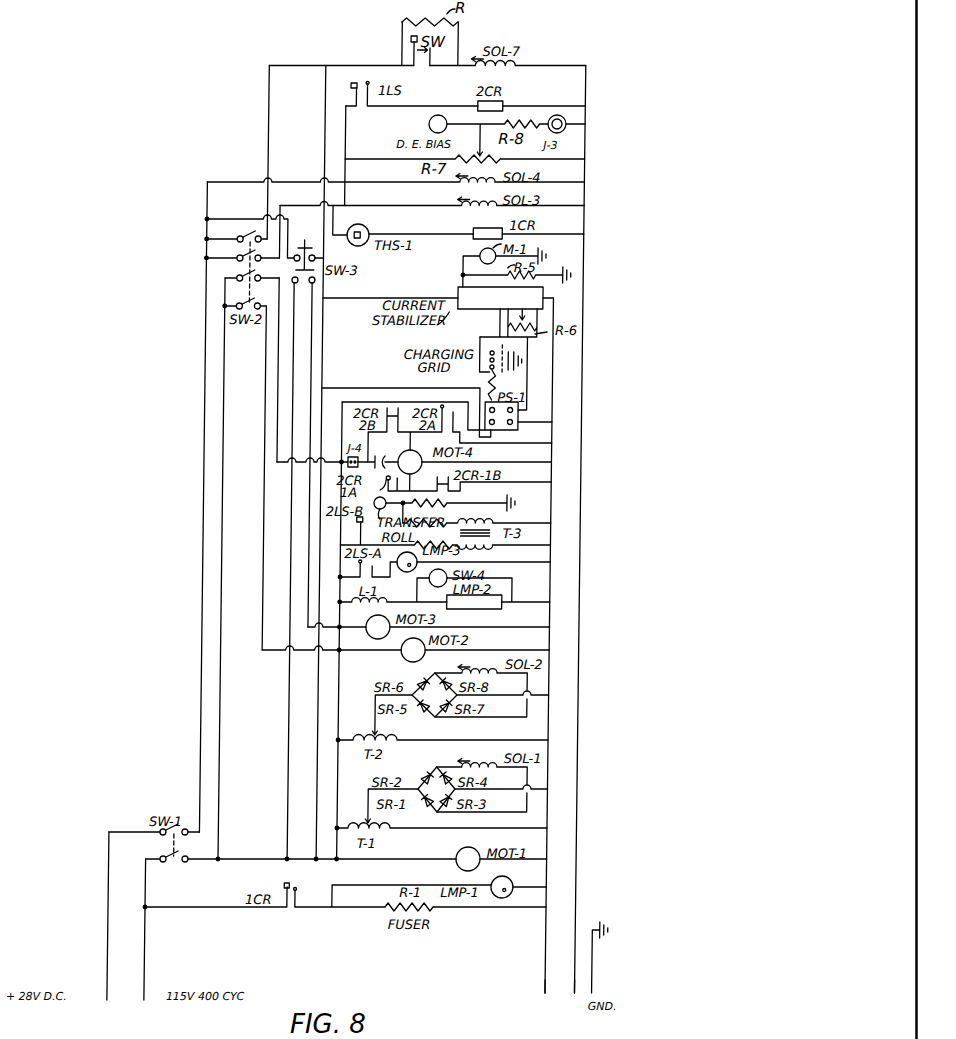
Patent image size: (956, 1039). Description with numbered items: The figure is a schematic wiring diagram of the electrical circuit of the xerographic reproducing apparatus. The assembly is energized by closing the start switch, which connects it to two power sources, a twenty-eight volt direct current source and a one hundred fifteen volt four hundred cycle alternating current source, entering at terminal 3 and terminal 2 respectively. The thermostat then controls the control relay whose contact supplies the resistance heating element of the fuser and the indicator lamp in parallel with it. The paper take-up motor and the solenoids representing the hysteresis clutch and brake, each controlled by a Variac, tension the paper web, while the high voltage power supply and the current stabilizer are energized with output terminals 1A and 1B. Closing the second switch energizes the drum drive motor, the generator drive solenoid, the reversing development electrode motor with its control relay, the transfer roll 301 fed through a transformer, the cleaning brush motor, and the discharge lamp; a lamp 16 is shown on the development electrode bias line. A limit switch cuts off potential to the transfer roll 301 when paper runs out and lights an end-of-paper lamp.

The lamp (D.E. bias) 16 is at (424, 124).
The transfer roll 301 is at (374, 501).
The terminal 1A is at (537, 996).
The terminal 1B is at (567, 996).
The terminal 2 (115V 400 cyc) 2 is at (170, 993).
The terminal 3 (+28V D.C.) 3 is at (92, 993).